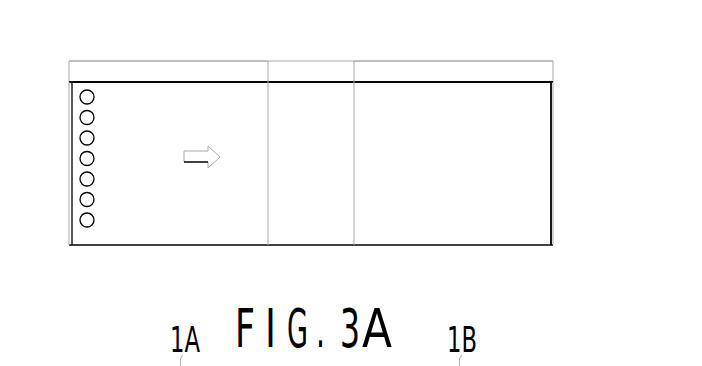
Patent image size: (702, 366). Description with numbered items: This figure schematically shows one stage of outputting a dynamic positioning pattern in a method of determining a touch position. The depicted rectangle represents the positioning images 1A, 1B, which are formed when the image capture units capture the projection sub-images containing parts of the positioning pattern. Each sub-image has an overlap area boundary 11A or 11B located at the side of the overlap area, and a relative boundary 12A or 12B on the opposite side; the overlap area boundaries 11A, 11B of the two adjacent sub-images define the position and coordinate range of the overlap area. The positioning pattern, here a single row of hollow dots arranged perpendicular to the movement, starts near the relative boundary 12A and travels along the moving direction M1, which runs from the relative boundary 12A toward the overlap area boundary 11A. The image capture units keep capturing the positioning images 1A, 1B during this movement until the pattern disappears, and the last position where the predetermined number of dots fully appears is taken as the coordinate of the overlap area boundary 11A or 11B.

The positioning image 1A is at (183, 61).
The positioning image 1B is at (462, 61).
The overlap area boundary 11A is at (354, 246).
The overlap area boundary 11B is at (268, 246).
The relative boundary 12A is at (69, 246).
The relative boundary 12B is at (553, 246).
The moving direction M1 is at (196, 151).